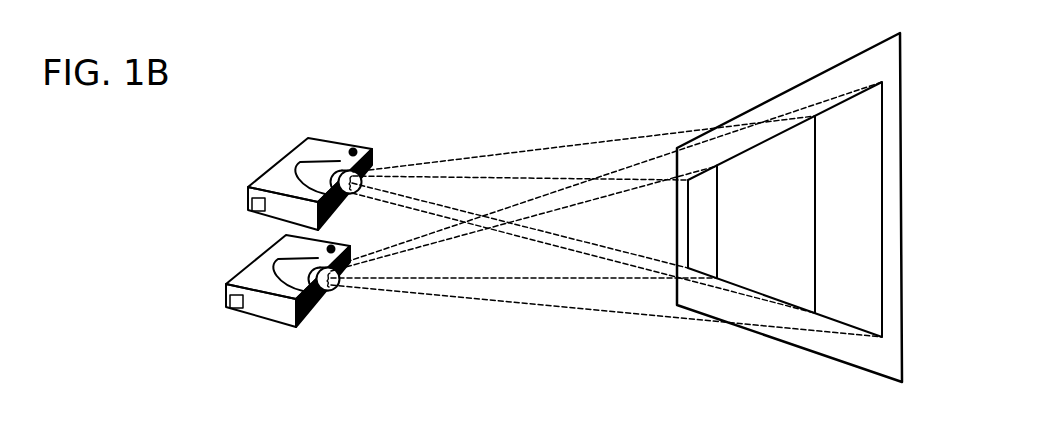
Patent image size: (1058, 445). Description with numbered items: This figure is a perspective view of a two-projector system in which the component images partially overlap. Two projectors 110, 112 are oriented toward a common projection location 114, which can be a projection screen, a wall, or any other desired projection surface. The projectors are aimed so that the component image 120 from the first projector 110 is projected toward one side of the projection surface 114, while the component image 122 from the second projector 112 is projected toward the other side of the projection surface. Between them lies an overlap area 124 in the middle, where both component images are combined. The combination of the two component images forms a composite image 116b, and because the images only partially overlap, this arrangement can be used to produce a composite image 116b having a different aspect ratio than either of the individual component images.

The projector 110 is at (248, 181).
The projector 112 is at (236, 275).
The projection location 114 is at (847, 77).
The composite image 116b is at (727, 293).
The component image 120 is at (696, 222).
The component image 122 is at (840, 267).
The overlap area 124 is at (760, 190).